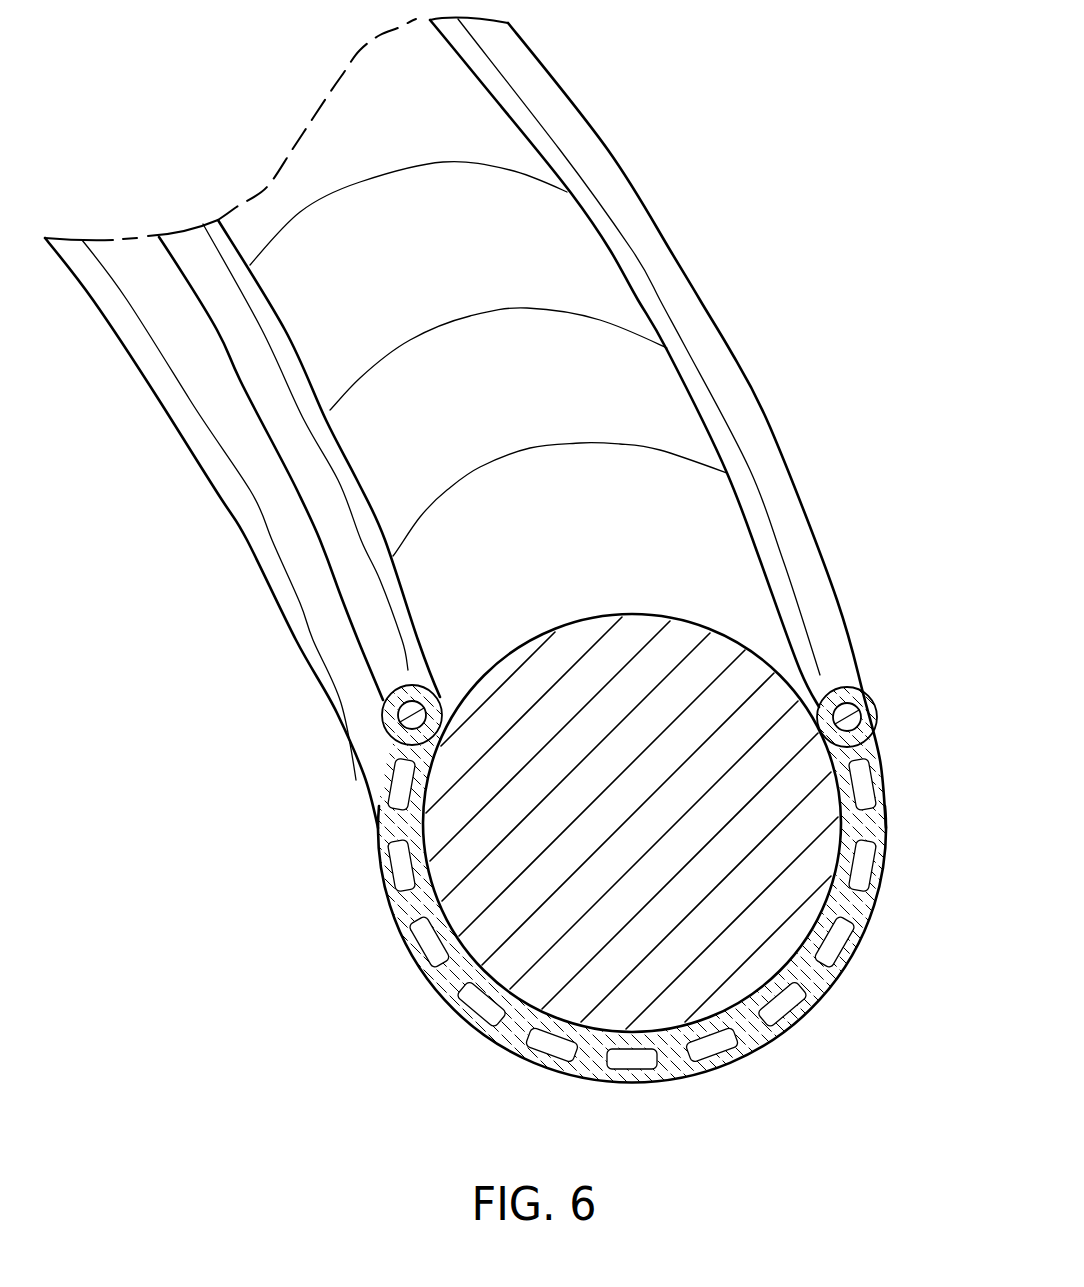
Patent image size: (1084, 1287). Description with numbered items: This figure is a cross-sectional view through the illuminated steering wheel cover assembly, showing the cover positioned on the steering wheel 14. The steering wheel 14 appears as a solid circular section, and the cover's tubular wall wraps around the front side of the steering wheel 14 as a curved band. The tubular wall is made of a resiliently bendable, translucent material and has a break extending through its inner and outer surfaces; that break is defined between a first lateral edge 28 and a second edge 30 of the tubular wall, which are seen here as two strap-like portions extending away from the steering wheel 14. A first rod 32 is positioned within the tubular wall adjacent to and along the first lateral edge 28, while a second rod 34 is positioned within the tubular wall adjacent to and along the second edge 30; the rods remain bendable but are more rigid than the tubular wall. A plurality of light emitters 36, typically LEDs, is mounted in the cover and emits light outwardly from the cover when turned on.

The steering wheel 14 is at (480, 897).
The first lateral edge 28 is at (318, 487).
The second edge 30 is at (768, 455).
The first rod 32 is at (398, 708).
The second rod 34 is at (873, 707).
The light emitters 36 is at (857, 868).